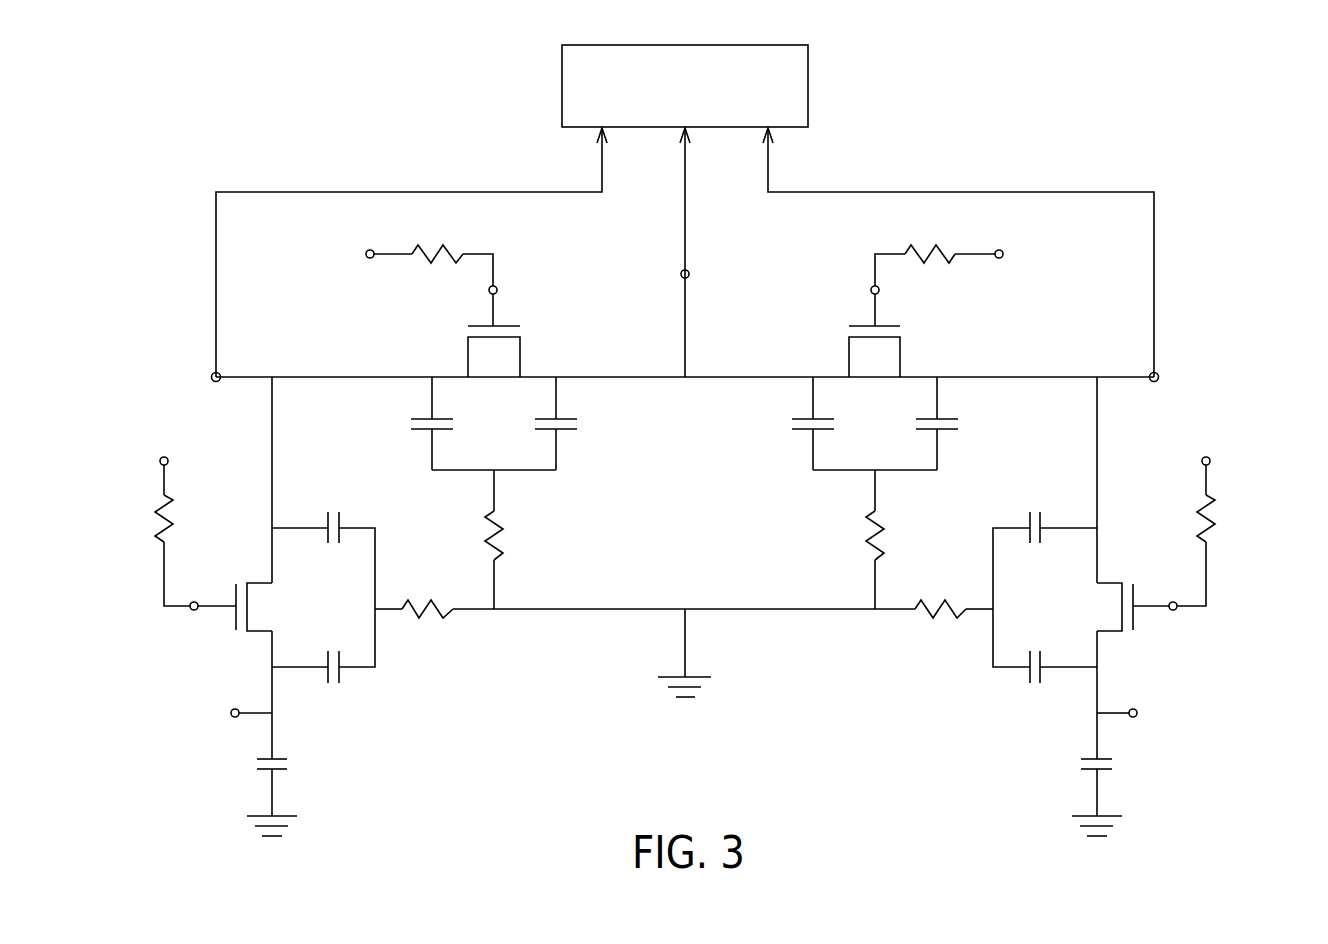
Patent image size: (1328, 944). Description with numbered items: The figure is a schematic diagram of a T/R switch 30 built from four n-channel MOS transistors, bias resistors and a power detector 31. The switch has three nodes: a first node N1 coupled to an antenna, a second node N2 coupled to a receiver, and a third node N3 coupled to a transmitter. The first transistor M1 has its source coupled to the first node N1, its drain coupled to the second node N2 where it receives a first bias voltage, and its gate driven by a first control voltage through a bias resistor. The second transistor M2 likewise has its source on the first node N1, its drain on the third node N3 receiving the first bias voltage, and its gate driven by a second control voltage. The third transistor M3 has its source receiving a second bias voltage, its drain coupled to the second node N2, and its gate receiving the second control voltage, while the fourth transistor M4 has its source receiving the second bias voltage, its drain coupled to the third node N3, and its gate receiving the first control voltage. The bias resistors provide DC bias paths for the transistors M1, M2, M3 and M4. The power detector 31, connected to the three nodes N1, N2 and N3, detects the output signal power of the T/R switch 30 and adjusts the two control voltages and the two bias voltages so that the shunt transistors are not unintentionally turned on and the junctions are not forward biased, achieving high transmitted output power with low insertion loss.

The T/R switch 30 is at (702, 440).
The power detector 31 is at (810, 83).
The first transistor M1 is at (494, 331).
The second transistor M2 is at (874, 331).
The third transistor M3 is at (235, 607).
The fourth transistor M4 is at (1128, 607).
The first node N1 is at (697, 252).
The second node N2 is at (394, 255).
The third node N3 is at (975, 255).